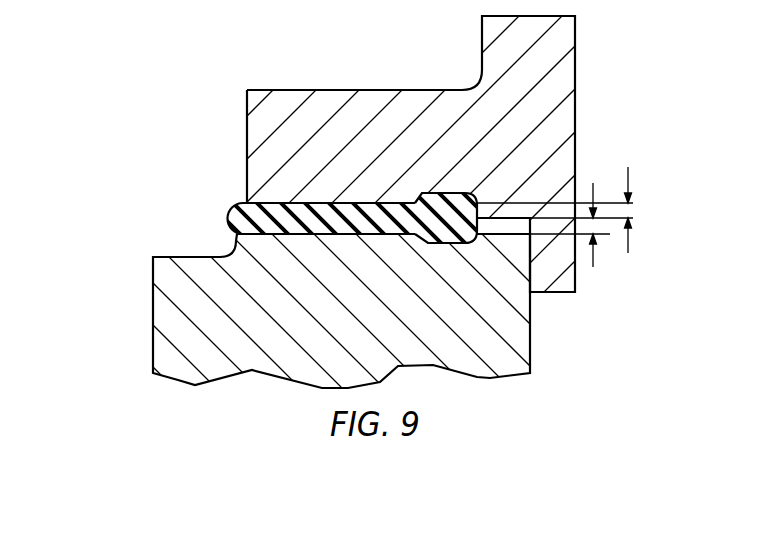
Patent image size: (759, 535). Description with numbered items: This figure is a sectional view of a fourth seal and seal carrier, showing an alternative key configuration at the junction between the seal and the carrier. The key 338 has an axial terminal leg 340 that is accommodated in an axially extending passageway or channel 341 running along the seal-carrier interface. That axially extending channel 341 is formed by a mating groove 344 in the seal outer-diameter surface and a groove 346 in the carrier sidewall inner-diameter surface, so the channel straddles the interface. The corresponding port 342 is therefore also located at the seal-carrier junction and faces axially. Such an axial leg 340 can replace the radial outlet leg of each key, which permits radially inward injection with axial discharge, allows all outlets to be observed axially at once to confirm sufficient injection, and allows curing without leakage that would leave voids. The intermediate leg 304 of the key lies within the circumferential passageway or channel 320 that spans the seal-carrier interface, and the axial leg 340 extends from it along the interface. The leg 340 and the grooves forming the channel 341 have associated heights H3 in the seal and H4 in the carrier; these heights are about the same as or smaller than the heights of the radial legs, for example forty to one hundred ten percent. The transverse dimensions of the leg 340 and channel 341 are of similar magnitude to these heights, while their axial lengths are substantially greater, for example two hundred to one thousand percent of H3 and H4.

The circumferential passageway 320 is at (448, 200).
The intermediate leg 304 is at (482, 200).
The axial terminal leg 340 is at (322, 203).
The axially extending passageway 341 is at (273, 195).
The port 342 is at (230, 196).
The groove in seal OD surface 344 is at (387, 246).
The groove in carrier sidewall ID surface 346 is at (393, 195).
The key 338 is at (462, 185).
The height in seal H3 is at (603, 267).
The height in carrier H4 is at (635, 253).